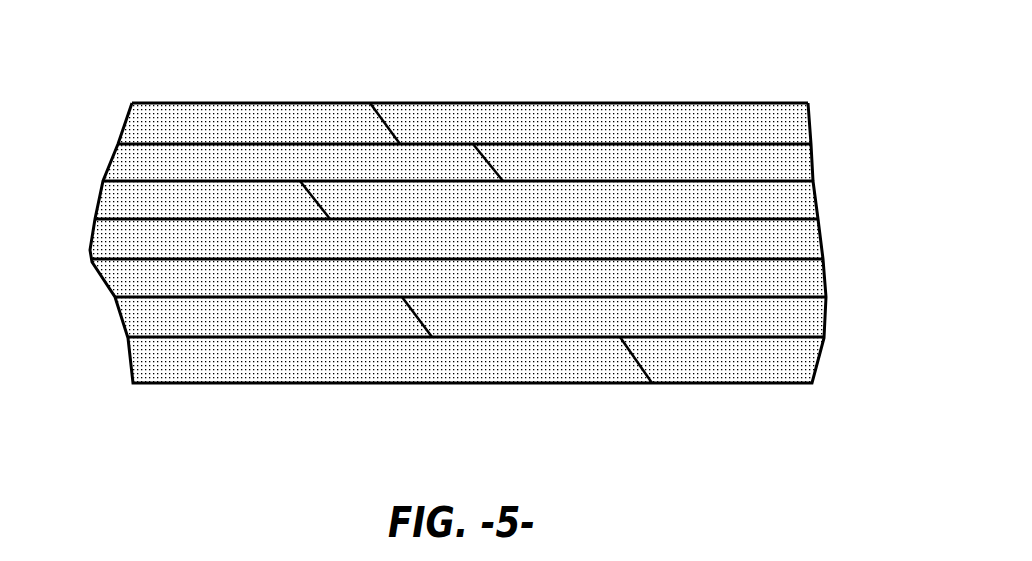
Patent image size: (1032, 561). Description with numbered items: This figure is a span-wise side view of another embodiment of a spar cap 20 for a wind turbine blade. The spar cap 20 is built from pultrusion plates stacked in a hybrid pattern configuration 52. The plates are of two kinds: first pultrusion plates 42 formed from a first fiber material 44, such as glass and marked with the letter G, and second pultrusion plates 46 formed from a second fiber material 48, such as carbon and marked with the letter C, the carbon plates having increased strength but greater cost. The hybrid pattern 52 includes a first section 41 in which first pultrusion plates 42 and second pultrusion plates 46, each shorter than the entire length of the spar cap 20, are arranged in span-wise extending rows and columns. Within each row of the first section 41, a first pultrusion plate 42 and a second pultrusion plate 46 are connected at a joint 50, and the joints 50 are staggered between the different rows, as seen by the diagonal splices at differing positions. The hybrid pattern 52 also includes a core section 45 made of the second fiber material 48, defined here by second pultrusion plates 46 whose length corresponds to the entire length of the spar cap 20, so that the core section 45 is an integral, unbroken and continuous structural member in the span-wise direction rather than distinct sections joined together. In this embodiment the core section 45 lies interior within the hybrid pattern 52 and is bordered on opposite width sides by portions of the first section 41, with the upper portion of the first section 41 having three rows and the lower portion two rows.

The spar cap 20 is at (832, 59).
The first section 41 is at (818, 117).
The first pultrusion plates 42 is at (108, 165).
The first fiber material 44 is at (103, 205).
The core section 45 is at (82, 232).
The second pultrusion plates 46 is at (821, 243).
The second fiber material 48 is at (820, 277).
The joint 50 is at (383, 122).
The stacked hybrid pattern configuration 52 is at (526, 98).